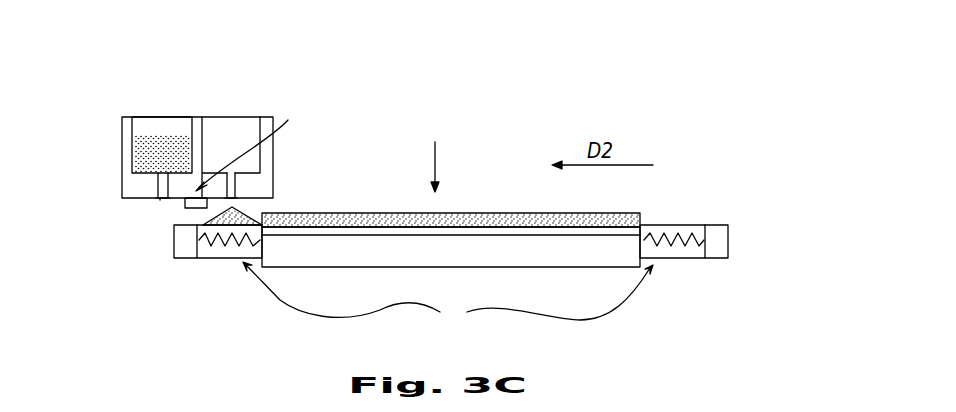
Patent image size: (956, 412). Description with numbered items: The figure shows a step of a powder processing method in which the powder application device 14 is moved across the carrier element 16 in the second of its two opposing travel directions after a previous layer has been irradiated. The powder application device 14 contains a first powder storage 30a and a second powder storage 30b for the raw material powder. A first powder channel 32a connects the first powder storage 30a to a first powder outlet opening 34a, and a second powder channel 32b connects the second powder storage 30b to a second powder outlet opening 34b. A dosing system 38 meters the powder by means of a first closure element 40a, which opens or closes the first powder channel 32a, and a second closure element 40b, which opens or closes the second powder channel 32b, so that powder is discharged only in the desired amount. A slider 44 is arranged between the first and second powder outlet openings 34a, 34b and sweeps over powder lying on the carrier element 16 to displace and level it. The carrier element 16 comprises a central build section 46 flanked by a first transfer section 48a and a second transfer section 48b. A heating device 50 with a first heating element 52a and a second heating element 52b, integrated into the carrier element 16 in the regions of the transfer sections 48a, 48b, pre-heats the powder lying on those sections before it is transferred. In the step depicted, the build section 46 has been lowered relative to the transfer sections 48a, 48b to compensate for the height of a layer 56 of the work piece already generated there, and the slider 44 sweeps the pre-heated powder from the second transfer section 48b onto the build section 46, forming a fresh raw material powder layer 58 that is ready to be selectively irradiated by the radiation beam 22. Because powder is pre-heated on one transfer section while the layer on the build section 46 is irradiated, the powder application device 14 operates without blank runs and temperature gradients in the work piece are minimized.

The powder application device 14 is at (194, 120).
The carrier element 16 is at (476, 246).
The radiation beam 22 is at (437, 163).
The first powder storage 30a is at (158, 122).
The second powder storage 30b is at (232, 122).
The first powder channel 32a is at (160, 192).
The second powder channel 32b is at (263, 199).
The first powder outlet opening 34a is at (160, 200).
The second powder outlet opening 34b is at (265, 210).
The dosing system 38 is at (248, 144).
The first closure element 40a is at (157, 183).
The second closure element 40b is at (237, 184).
The slider 44 is at (202, 210).
The build section 46 is at (410, 252).
The first transfer section 48a is at (232, 252).
The second transfer section 48b is at (670, 253).
The heating device 50 is at (448, 294).
The first heating element 52a is at (207, 243).
The second heating element 52b is at (702, 256).
The layer of the work piece 56 is at (527, 222).
The raw material powder layer 58 is at (483, 214).